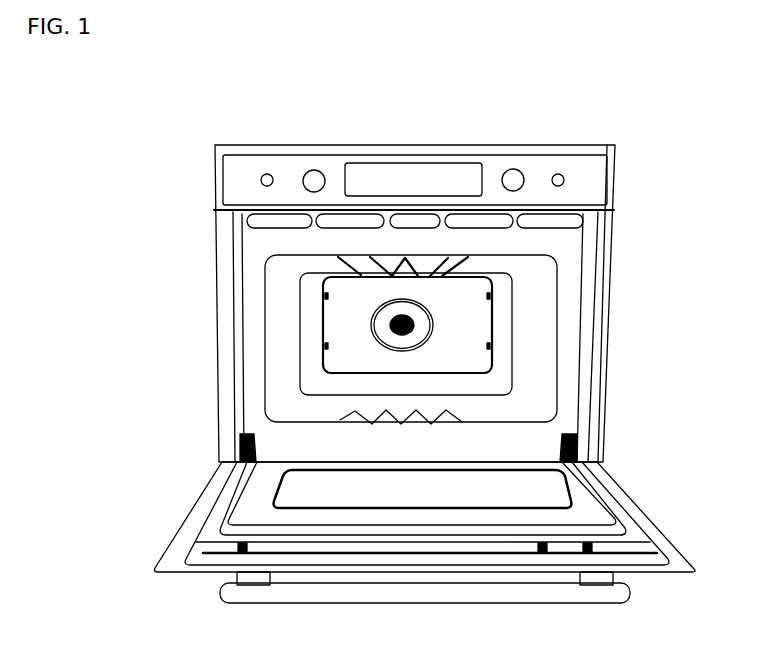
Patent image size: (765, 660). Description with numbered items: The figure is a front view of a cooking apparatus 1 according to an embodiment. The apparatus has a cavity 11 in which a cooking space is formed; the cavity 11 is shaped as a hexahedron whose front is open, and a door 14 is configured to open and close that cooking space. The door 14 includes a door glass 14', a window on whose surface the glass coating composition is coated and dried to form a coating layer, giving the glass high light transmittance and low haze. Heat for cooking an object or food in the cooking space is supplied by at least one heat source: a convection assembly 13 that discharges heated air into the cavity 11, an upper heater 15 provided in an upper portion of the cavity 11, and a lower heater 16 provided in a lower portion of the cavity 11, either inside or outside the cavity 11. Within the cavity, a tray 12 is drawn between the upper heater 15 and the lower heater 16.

The cooking apparatus 1 is at (177, 130).
The cavity 11 is at (264, 275).
The tray 12 is at (296, 262).
The convection assembly 13 is at (362, 326).
The door 14 is at (413, 529).
The door glass 14' is at (497, 481).
The upper heater 15 is at (518, 272).
The lower heater 16 is at (470, 418).